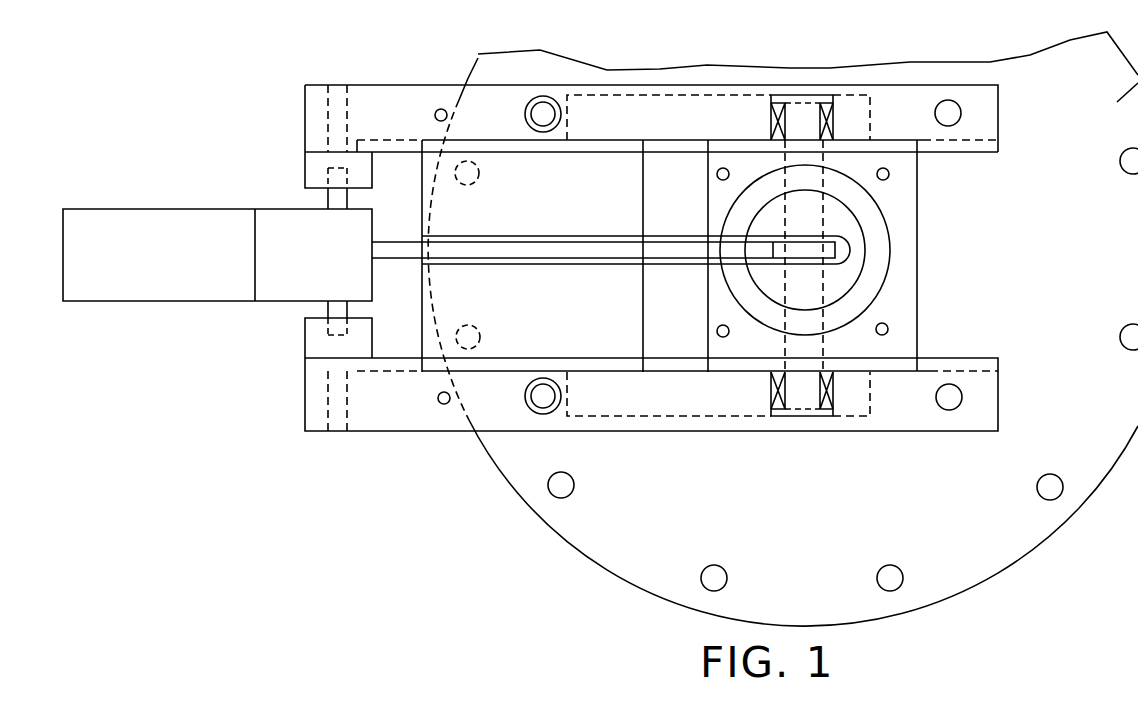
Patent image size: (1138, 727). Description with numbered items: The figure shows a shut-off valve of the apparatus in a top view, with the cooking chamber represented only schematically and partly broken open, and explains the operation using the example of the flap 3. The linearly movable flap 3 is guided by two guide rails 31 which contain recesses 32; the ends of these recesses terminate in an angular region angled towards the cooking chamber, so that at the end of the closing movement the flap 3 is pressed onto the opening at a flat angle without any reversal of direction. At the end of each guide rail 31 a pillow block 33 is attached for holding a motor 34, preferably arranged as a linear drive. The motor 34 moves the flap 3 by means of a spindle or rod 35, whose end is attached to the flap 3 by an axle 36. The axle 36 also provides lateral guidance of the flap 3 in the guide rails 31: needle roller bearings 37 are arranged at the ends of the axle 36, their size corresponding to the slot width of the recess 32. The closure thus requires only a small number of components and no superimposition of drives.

The flap 3 is at (907, 312).
The guide rails 31 is at (362, 110).
The recesses 32 is at (740, 103).
The pillow block 33 is at (312, 175).
The motor 34 is at (170, 265).
The rod 35 is at (549, 250).
The axle 36 is at (797, 345).
The needle roller bearings 37 is at (830, 112).